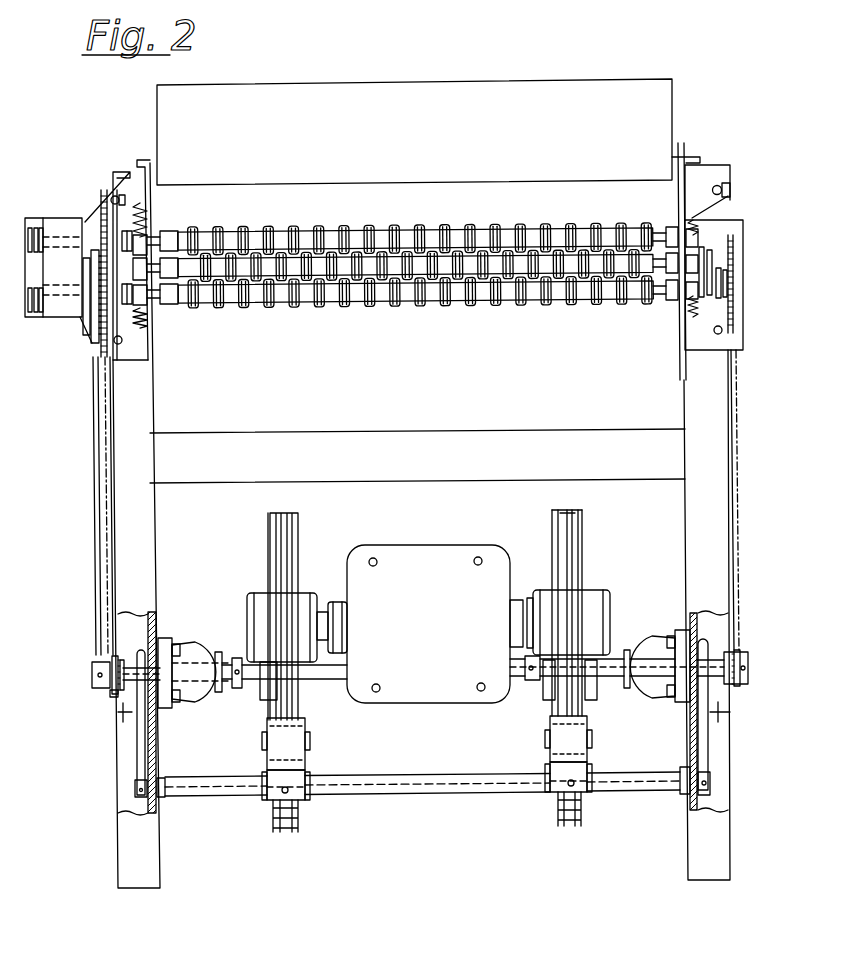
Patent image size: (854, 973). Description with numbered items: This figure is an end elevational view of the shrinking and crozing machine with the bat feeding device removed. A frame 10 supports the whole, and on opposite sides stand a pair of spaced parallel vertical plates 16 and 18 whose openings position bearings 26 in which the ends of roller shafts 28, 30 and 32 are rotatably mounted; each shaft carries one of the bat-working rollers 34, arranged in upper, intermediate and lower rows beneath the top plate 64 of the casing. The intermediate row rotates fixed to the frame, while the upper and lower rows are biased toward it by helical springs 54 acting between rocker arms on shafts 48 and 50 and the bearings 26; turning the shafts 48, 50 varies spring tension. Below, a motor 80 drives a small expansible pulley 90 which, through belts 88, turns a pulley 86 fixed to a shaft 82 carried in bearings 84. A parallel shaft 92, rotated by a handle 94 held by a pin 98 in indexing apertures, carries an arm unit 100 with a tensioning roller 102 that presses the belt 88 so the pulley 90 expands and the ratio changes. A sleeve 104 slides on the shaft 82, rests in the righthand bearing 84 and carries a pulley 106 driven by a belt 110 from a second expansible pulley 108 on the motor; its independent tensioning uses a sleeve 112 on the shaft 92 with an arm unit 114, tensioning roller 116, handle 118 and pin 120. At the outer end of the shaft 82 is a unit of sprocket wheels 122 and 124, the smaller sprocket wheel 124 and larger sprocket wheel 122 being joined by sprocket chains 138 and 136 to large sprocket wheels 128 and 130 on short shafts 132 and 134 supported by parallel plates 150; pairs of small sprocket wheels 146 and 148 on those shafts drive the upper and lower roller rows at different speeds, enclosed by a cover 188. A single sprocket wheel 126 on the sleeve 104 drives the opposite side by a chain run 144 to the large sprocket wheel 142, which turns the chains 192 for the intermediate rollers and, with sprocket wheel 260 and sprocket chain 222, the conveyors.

The frame 10 is at (118, 848).
The vertical plate 16 is at (678, 180).
The vertical plate 18 is at (150, 180).
The bearing 26 is at (168, 230).
The roller shaft 28 is at (180, 232).
The roller shaft 30 is at (180, 270).
The roller shaft 32 is at (168, 300).
The bat-working roller 34 is at (383, 228).
The shaft 48 is at (115, 196).
The shaft 50 is at (115, 343).
The helical spring 54 is at (140, 203).
The top plate 64 is at (346, 84).
The motor 80 is at (403, 550).
The shaft 82 is at (333, 680).
The bearing 84 is at (192, 650).
The pulley 86 is at (268, 545).
The belt 88 is at (283, 513).
The pulley 90 is at (252, 600).
The shaft 92 is at (228, 795).
The handle 94 is at (137, 740).
The pin 98 is at (118, 712).
The arm unit 100 is at (265, 770).
The tensioning roller 102 is at (267, 730).
The sleeve 104 is at (617, 678).
The pulley 106 is at (582, 535).
The pulley 108 is at (590, 590).
The belt 110 is at (562, 511).
The sleeve 112 is at (520, 792).
The arm unit 114 is at (550, 768).
The tensioning roller 116 is at (550, 722).
The handle 118 is at (710, 738).
The pin 120 is at (725, 710).
The sprocket wheel 122 is at (108, 696).
The sprocket wheel 124 is at (92, 660).
The sprocket wheel 126 is at (740, 652).
The sprocket wheel 128 is at (85, 340).
The sprocket wheel 130 is at (100, 210).
The short shaft 132 is at (68, 318).
The short shaft 134 is at (62, 222).
The sprocket chain 136 is at (105, 470).
The sprocket chain 138 is at (93, 432).
The sprocket wheel 142 is at (735, 240).
The right chain run 144 is at (738, 448).
The small sprocket wheel 146 is at (40, 228).
The small sprocket wheel 148 is at (34, 313).
The plate 150 is at (46, 258).
The cover 188 is at (26, 224).
The sprocket chain 192 is at (728, 226).
The sprocket chain 222 is at (705, 315).
The sprocket wheel 260 is at (722, 300).